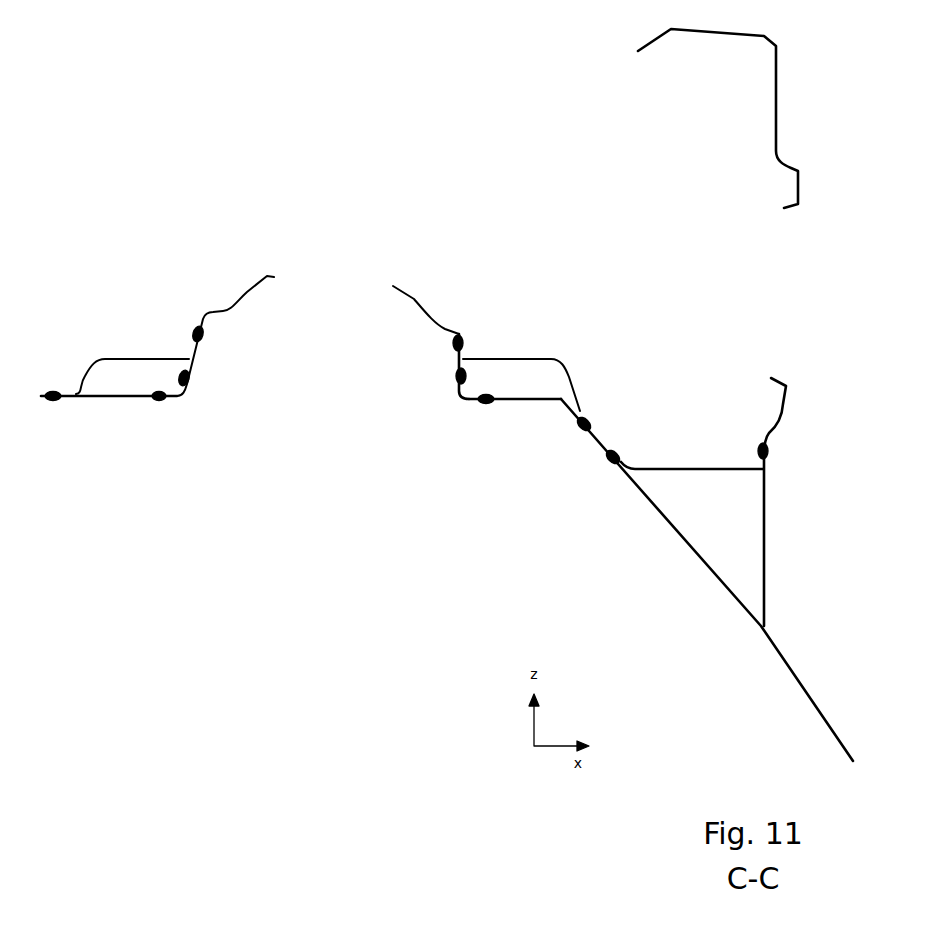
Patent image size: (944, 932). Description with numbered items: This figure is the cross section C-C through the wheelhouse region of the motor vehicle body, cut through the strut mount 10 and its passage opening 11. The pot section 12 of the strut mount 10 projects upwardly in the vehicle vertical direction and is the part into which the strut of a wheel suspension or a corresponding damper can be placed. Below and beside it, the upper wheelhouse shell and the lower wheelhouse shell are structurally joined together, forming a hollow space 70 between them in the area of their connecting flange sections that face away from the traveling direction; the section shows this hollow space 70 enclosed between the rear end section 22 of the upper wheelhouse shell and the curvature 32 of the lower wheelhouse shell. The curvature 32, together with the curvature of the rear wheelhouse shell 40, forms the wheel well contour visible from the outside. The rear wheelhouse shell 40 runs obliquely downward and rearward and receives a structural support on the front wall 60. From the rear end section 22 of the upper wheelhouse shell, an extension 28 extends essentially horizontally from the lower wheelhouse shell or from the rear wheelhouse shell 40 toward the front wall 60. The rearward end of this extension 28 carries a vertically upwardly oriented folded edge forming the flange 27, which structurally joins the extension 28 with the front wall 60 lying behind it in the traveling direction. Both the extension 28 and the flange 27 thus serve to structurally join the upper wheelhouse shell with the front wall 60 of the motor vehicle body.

The strut mount 10 is at (262, 268).
The passage opening 11 is at (328, 268).
The pot section 12 is at (190, 363).
The rear end section of the upper wheelhouse shell 22 is at (107, 357).
The flange 27 is at (760, 458).
The extension 28 is at (672, 468).
The curvature of the lower wheelhouse shell 32 is at (93, 396).
The rear wheelhouse shell 40 is at (718, 583).
The front wall 60 is at (762, 523).
The hollow space 70 is at (160, 368).